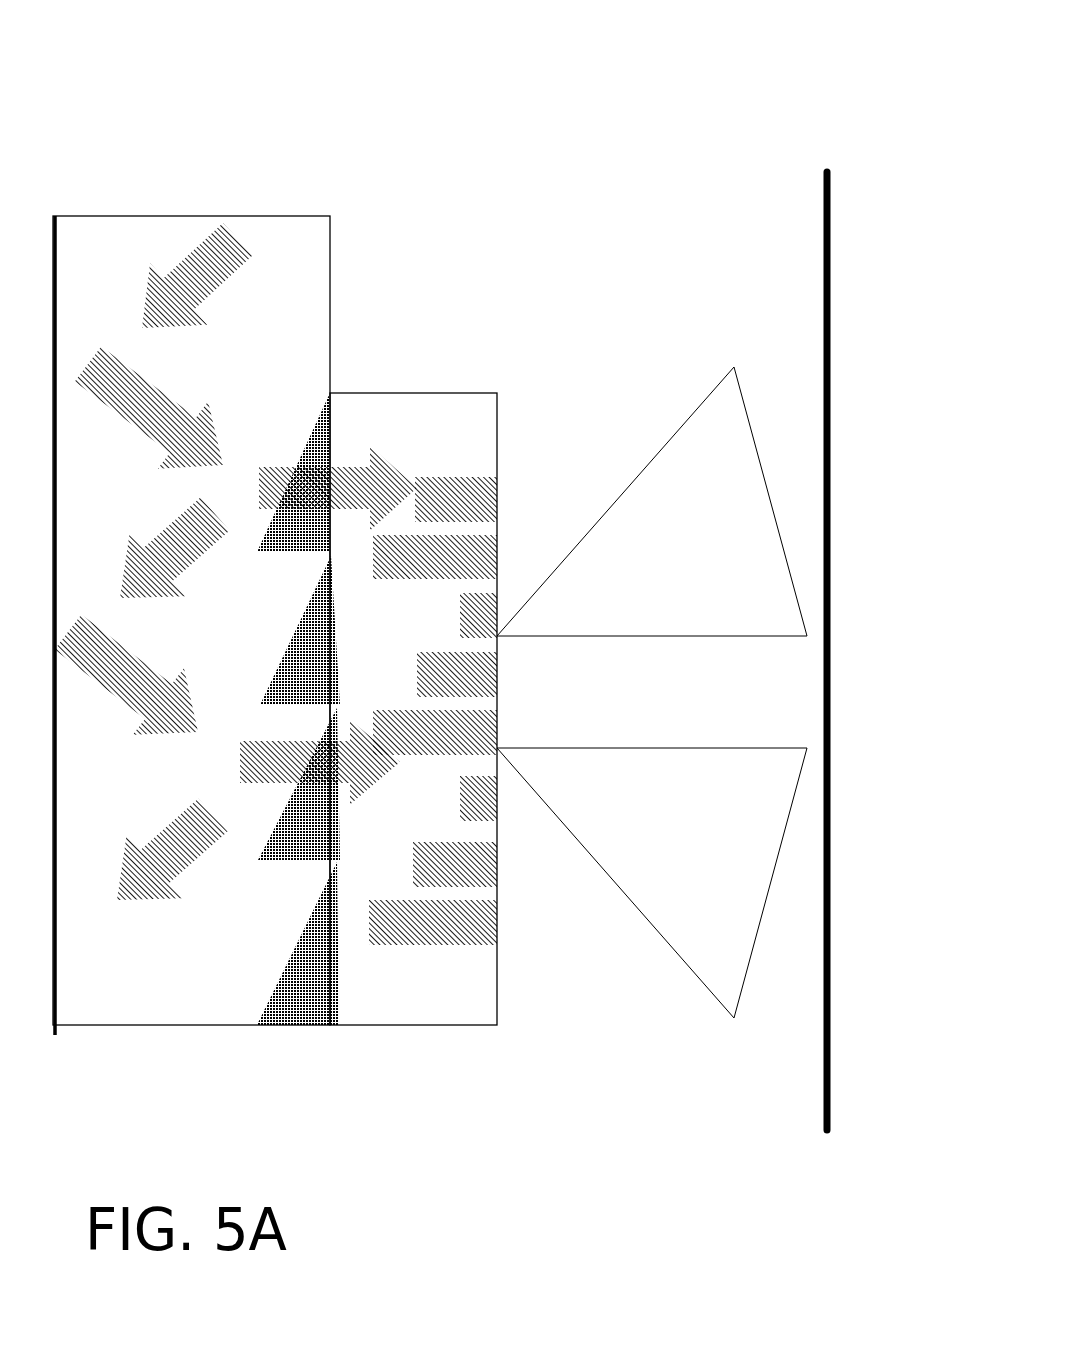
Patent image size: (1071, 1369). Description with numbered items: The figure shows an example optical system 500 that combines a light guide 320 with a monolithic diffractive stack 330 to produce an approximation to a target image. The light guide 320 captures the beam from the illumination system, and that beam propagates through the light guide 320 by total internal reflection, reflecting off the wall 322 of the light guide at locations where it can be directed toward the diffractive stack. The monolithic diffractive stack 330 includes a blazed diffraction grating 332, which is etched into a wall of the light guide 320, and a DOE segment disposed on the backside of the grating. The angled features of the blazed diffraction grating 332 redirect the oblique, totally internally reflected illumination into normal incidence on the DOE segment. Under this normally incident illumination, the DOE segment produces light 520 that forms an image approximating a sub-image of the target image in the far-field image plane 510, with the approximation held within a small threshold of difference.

The optical system 500 is at (144, 49).
The wall 322 is at (57, 291).
The light guide 320 is at (332, 242).
The blazed diffraction grating 332 is at (331, 430).
The monolithic diffractive stack 330 is at (369, 1062).
The light 520 is at (753, 574).
The far-field image plane 510 is at (825, 171).